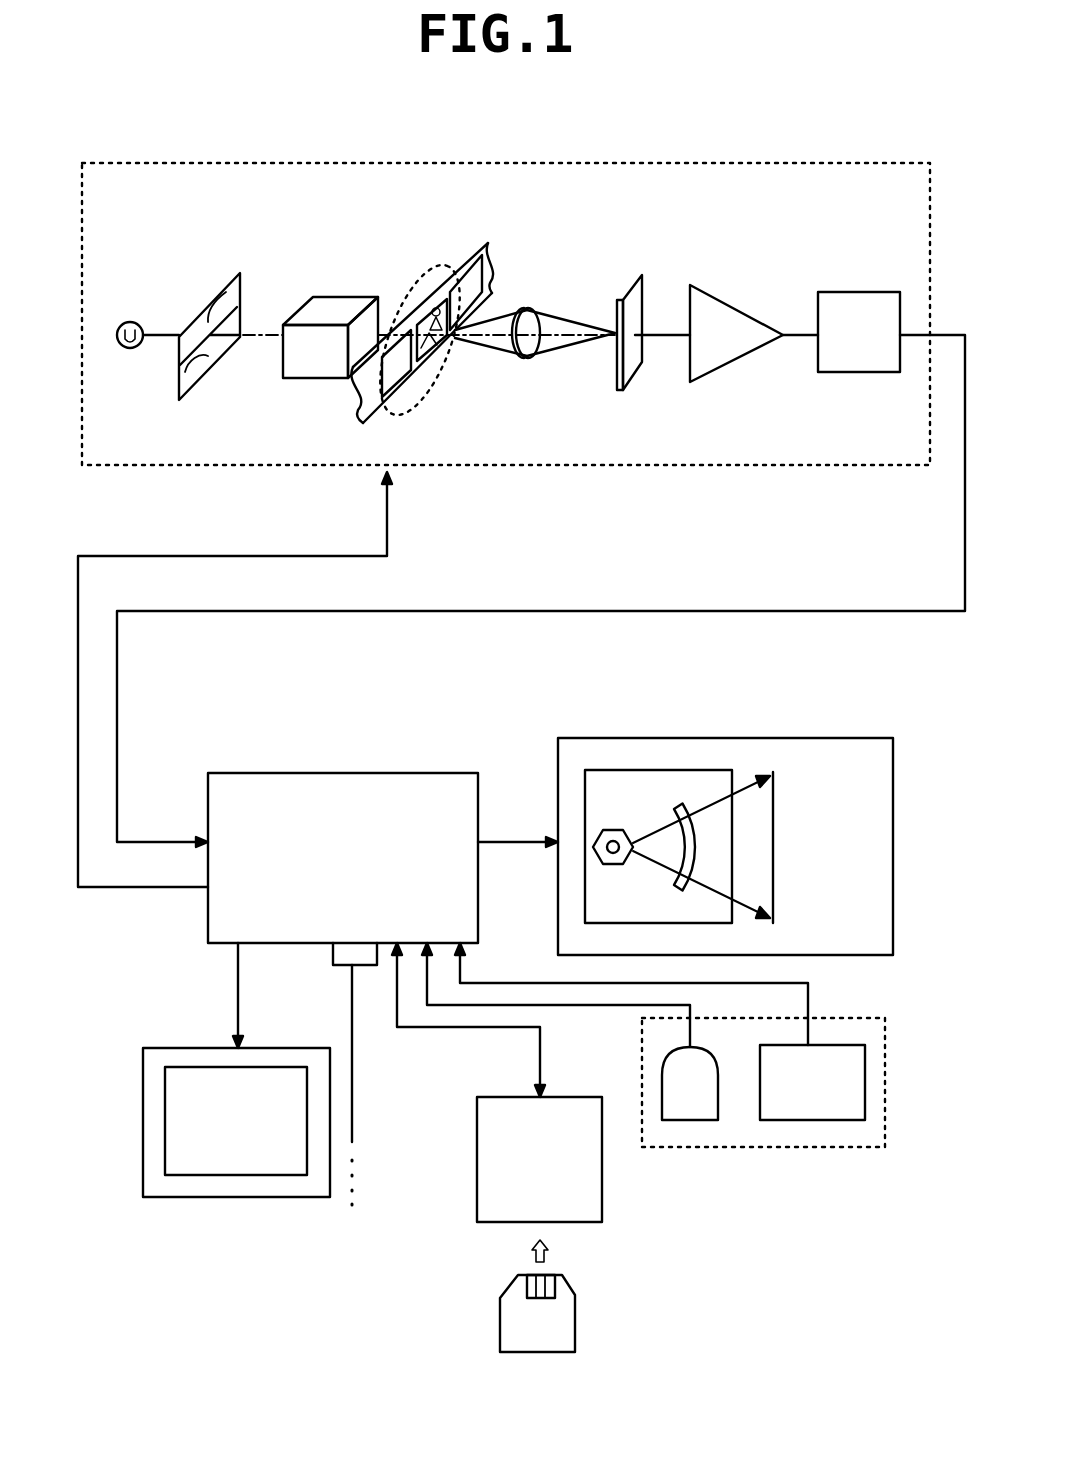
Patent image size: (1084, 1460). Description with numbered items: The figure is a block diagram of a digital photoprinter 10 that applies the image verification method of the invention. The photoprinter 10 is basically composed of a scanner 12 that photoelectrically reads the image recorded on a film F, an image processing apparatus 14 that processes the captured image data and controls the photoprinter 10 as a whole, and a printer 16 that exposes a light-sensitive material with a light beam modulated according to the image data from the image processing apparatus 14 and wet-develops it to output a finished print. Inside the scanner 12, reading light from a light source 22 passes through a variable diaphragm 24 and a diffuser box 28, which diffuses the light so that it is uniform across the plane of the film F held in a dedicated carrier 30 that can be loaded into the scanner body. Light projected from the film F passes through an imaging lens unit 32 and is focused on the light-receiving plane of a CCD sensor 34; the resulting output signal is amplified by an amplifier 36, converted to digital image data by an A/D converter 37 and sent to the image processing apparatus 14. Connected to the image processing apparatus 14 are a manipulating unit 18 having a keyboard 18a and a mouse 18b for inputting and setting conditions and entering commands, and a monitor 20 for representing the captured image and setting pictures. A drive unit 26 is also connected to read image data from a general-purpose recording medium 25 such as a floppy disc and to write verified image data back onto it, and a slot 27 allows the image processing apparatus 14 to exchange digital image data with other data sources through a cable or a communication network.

The digital photoprinter 10 is at (794, 131).
The scanner 12 is at (313, 163).
The image processing apparatus 14 is at (343, 773).
The printer 16 is at (718, 738).
The manipulating unit 18 is at (762, 1134).
The keyboard 18a is at (812, 1120).
The mouse 18b is at (683, 1120).
The monitor 20 is at (223, 1197).
The light source 22 is at (130, 322).
The variable diaphragm 24 is at (227, 289).
The general-purpose image recording medium 25 is at (510, 1324).
The drive unit 26 is at (483, 1192).
The slot 27 is at (363, 962).
The diffuser box 28 is at (327, 317).
The dedicated carrier 30 is at (455, 375).
The imaging lens unit 32 is at (528, 308).
The CCD sensor 34 is at (640, 303).
The amplifier 36 is at (733, 357).
The A/D converter 37 is at (855, 292).
The film F is at (473, 245).